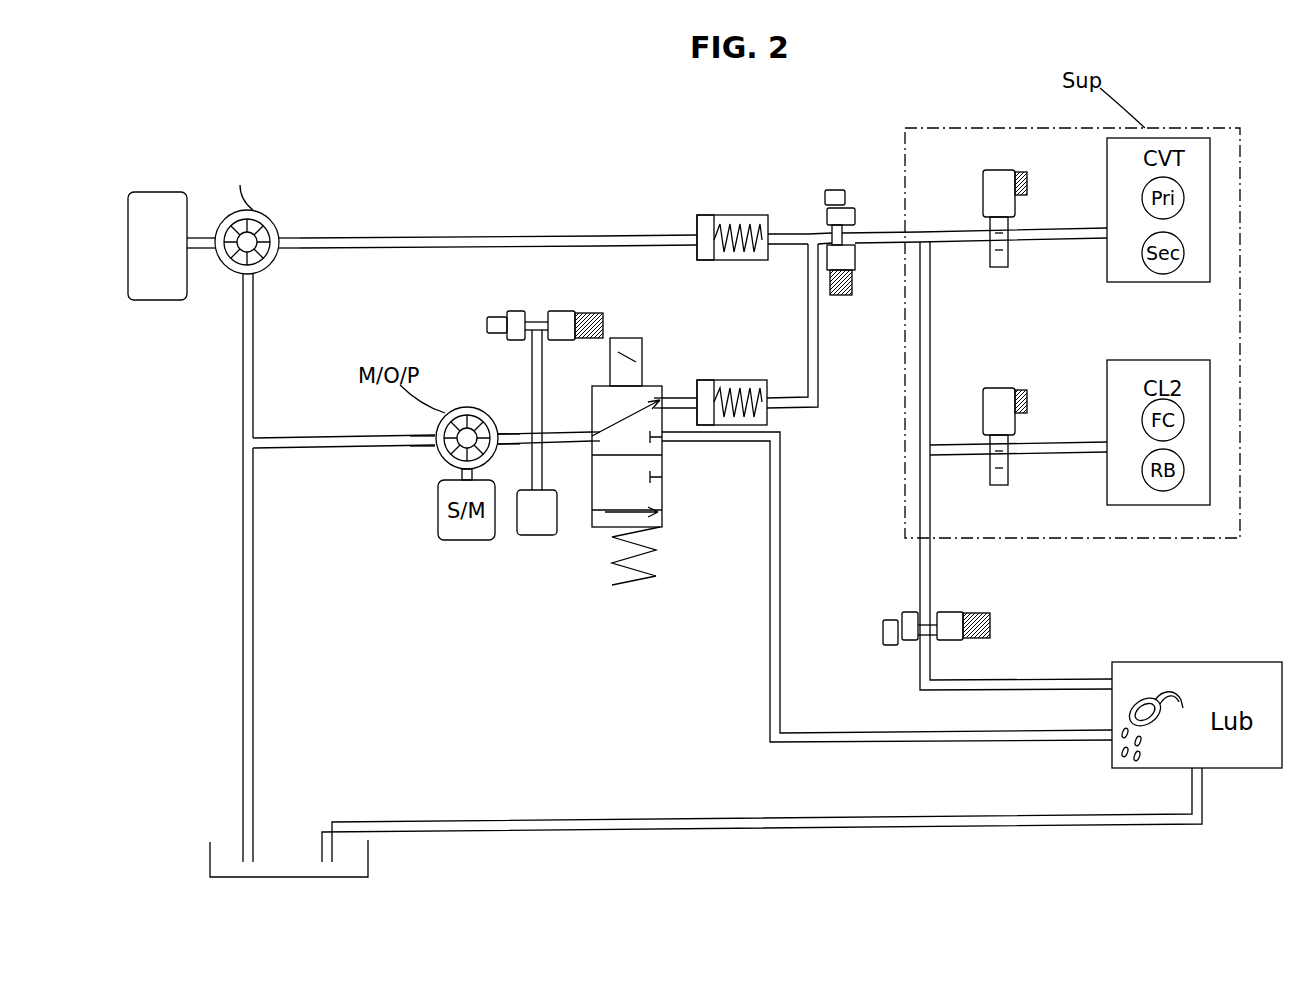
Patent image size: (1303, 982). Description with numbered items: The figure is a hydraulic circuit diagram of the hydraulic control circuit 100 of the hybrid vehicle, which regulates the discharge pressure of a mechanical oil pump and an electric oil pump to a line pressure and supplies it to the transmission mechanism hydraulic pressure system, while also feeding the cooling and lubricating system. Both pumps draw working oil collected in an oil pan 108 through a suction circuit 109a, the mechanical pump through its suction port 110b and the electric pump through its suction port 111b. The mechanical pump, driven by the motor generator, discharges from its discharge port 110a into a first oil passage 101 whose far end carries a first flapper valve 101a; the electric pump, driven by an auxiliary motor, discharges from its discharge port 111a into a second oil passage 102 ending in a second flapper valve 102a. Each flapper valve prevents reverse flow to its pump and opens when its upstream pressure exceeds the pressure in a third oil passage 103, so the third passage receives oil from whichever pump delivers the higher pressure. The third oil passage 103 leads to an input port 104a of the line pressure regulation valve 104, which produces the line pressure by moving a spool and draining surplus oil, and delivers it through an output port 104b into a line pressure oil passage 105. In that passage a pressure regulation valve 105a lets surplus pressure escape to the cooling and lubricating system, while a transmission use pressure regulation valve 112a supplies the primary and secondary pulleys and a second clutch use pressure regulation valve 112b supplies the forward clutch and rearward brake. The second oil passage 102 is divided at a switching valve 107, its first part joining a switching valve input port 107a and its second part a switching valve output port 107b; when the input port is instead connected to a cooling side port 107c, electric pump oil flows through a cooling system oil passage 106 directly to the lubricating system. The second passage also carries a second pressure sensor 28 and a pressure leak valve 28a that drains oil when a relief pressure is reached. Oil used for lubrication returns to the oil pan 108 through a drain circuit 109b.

The hydraulic control circuit 100 is at (222, 140).
The first oil passage 101 is at (487, 236).
The first flapper valve 101a is at (725, 215).
The second oil passage 102 is at (587, 435).
The second flapper valve 102a is at (748, 380).
The third oil passage 103 is at (822, 345).
The line pressure regulation valve 104 is at (832, 190).
The input port 104a is at (822, 236).
The output port 104b is at (858, 243).
The line pressure oil passage 105 is at (880, 252).
The pressure regulation valve 105a is at (912, 645).
The cooling system oil passage 106 is at (770, 545).
The switching valve 107 is at (647, 435).
The switching valve input port 107a is at (585, 440).
The switching valve output port 107b is at (673, 397).
The cooling side port 107c is at (665, 437).
The oil pan 108 is at (210, 855).
The suction circuit 109a is at (240, 570).
The drain circuit 109b is at (706, 816).
The discharge port 110a is at (284, 236).
The suction port 110b is at (246, 292).
The discharge port 111a is at (510, 455).
The suction port 111b is at (433, 458).
The transmission use pressure regulation valve 112a is at (1000, 172).
The second clutch use pressure regulation valve 112b is at (1000, 390).
The second pressure sensor 28 is at (537, 535).
The pressure leak valve 28a is at (516, 317).